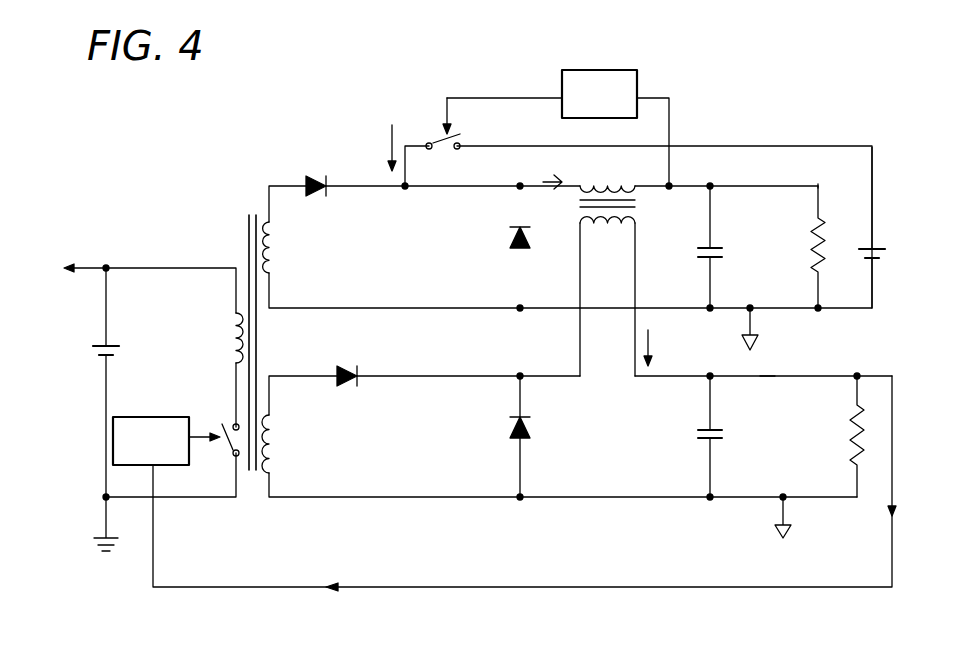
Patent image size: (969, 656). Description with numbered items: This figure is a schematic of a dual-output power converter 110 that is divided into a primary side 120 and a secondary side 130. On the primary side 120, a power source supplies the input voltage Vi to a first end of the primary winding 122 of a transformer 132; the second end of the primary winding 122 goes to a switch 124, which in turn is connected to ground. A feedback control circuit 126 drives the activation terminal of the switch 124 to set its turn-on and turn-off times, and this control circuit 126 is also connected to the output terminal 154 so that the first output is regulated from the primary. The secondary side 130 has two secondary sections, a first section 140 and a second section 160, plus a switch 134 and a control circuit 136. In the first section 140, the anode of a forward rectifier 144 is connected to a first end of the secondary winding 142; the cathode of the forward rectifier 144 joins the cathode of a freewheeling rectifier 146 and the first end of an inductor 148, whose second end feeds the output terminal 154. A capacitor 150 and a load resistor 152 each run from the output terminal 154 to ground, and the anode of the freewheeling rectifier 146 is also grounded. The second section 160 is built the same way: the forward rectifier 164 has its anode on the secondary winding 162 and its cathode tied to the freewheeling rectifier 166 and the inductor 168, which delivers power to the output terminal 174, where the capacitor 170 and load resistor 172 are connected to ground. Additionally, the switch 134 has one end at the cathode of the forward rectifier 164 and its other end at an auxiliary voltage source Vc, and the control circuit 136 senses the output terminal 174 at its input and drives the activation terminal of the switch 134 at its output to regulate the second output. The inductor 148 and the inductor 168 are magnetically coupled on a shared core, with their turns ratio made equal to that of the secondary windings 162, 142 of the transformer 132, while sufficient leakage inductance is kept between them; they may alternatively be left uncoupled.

The power supply circuit 110 is at (722, 53).
The primary side 120 is at (140, 266).
The primary winding 122 is at (230, 315).
The switch 124 is at (230, 416).
The feedback control circuit 126 is at (163, 416).
The secondary side 130 is at (556, 537).
The transformer 132 is at (243, 233).
The switch 134 is at (432, 136).
The control circuit 136 is at (592, 70).
The first section 140 is at (427, 480).
The secondary winding 142 is at (277, 423).
The forward rectifier 144 is at (338, 369).
The freewheeling rectifier 146 is at (508, 425).
The inductor 148 is at (627, 238).
The capacitor 150 is at (698, 434).
The load resistor 152 is at (847, 428).
The output terminal 154 is at (767, 378).
The second section 160 is at (458, 295).
The secondary winding 162 is at (276, 267).
The forward rectifier 164 is at (312, 177).
The freewheeling rectifier 166 is at (507, 236).
The inductor 168 is at (637, 191).
The capacitor 170 is at (700, 258).
The load resistor 172 is at (810, 243).
The output terminal 174 is at (818, 186).